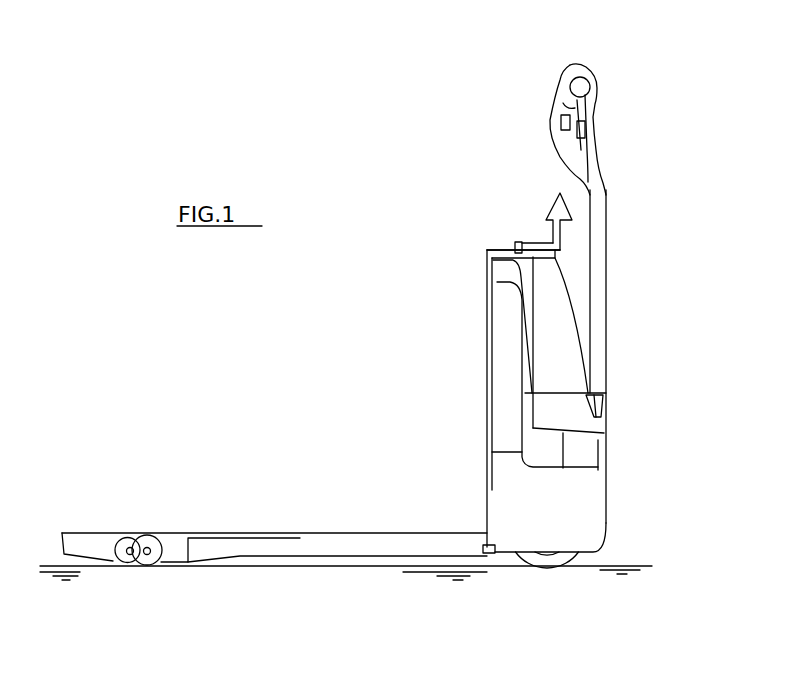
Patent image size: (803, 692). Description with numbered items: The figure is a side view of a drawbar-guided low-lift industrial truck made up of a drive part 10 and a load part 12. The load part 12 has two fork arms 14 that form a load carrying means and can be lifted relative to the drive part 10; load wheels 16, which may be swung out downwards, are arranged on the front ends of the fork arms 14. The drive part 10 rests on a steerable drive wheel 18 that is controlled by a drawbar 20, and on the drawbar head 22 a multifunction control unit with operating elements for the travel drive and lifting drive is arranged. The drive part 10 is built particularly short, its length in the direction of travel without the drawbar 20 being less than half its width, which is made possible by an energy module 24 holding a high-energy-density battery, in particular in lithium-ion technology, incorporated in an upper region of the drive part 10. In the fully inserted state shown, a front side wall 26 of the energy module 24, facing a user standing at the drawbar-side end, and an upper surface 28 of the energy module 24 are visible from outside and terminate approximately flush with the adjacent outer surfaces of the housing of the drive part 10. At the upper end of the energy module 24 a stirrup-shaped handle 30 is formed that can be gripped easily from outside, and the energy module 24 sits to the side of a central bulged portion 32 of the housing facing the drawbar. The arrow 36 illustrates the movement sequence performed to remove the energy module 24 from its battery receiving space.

The drive part 10 is at (446, 321).
The load part 12 is at (241, 458).
The fork arms 14 is at (388, 542).
The load wheels 16 is at (122, 562).
The steerable drive wheel 18 is at (563, 555).
The drawbar 20 is at (601, 332).
The drawbar head 22 is at (558, 105).
The energy module 24 is at (523, 282).
The front side wall 26 is at (537, 296).
The upper surface 28 is at (512, 248).
The stirrup-shaped handle 30 is at (517, 243).
The central bulged portion 32 is at (568, 368).
The arrow 36 is at (553, 240).